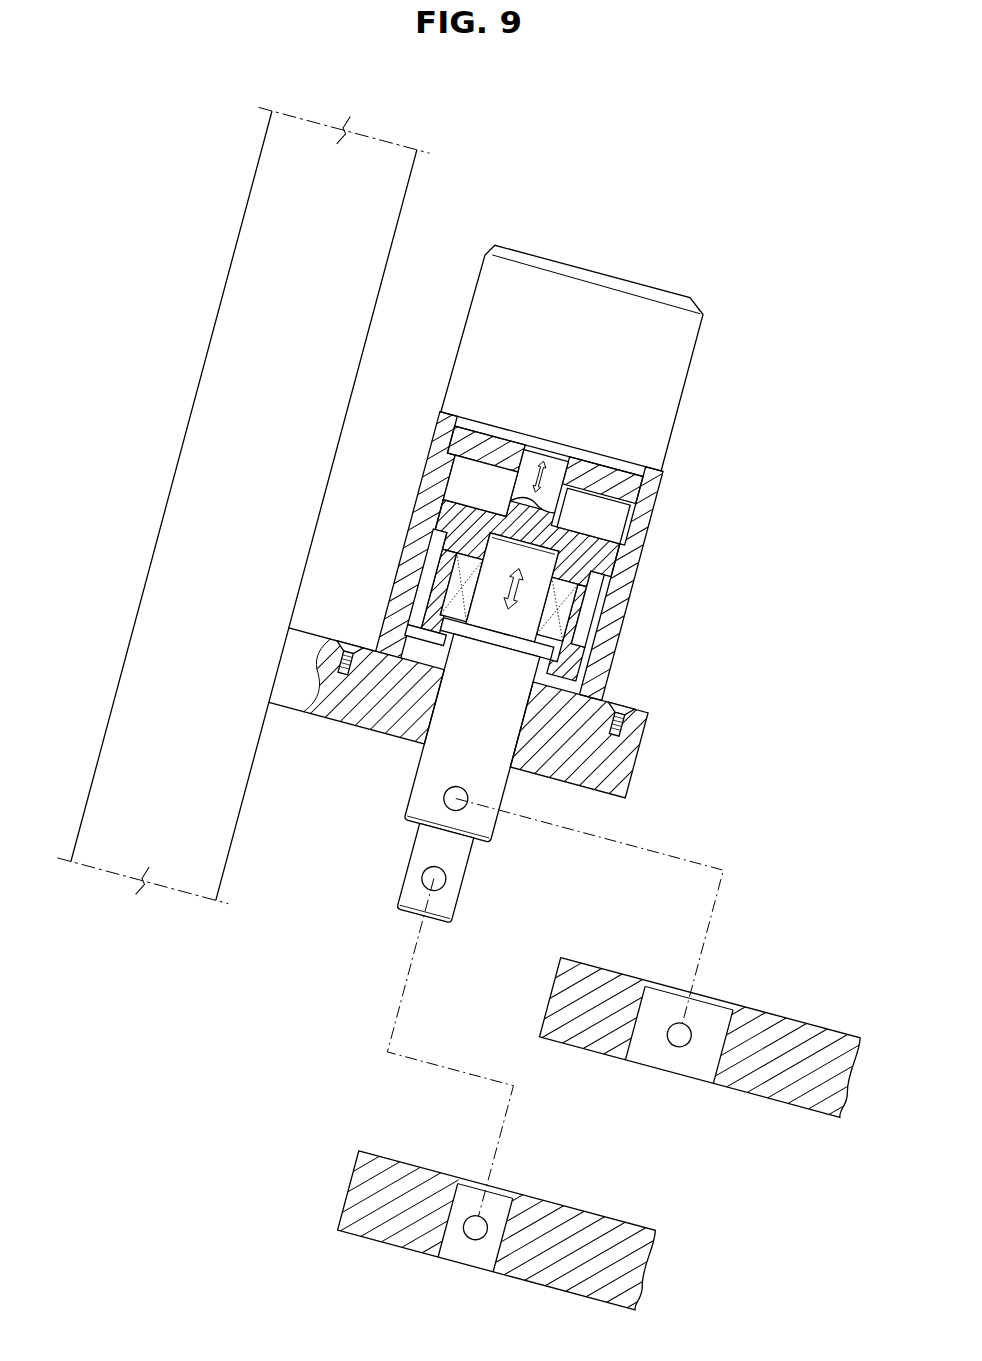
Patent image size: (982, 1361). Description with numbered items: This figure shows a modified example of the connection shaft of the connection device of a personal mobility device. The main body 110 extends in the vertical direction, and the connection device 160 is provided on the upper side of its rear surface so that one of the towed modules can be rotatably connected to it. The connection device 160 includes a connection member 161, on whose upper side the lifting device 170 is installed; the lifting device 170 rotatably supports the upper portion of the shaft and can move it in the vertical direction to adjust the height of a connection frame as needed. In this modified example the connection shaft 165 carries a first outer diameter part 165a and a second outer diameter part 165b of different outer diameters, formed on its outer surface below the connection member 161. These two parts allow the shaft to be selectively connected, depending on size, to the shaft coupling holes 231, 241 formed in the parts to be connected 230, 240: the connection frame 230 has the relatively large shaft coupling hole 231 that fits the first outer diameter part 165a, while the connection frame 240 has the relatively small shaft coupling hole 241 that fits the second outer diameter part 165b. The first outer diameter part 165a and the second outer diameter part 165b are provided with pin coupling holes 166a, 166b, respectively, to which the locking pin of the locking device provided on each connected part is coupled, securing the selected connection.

The main body 110 is at (218, 368).
The connection device 160 is at (694, 497).
The connection member 161 is at (627, 757).
The connection shaft 165 is at (421, 731).
The first outer diameter part 165a is at (422, 800).
The second outer diameter part 165b is at (412, 893).
The pin coupling hole 166a is at (466, 793).
The pin coupling hole 166b is at (444, 881).
The lifting device 170 is at (704, 283).
The connection frame 230 is at (780, 1028).
The shaft coupling hole 231 is at (680, 1022).
The connection frame 240 is at (565, 1220).
The shaft coupling hole 241 is at (477, 1216).